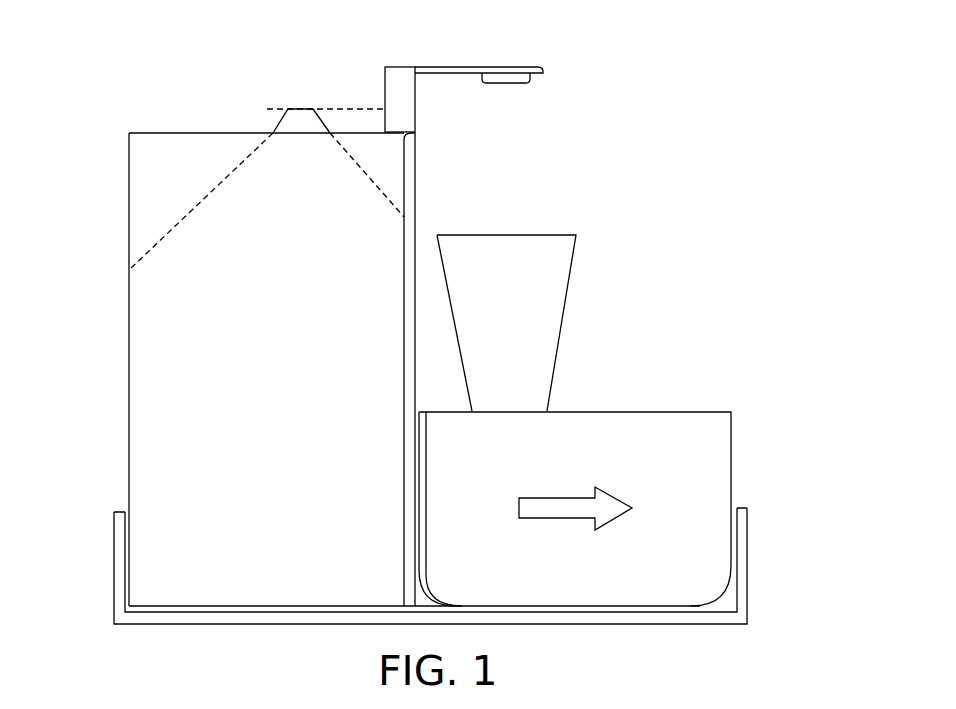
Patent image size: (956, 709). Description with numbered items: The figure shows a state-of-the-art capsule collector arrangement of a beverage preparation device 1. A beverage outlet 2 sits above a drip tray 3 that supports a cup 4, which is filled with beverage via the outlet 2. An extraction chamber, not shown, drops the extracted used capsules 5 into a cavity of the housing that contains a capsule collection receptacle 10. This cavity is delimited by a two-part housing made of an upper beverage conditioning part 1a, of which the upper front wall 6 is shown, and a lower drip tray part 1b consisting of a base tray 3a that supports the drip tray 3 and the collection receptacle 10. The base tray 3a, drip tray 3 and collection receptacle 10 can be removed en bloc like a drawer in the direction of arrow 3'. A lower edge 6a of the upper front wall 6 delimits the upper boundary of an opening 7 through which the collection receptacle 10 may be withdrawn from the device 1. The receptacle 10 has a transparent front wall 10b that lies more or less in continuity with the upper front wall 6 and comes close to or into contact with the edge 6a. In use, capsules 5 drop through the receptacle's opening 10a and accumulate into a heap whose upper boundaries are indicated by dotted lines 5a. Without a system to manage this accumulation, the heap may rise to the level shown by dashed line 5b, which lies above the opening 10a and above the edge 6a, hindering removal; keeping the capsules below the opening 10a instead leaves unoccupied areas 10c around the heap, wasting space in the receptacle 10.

The beverage preparation device 1 is at (627, 177).
The upper beverage conditioning part 1a is at (375, 66).
The lower drip tray part 1b is at (762, 510).
The beverage outlet 2 is at (507, 83).
The drip tray 3 is at (575, 480).
The arrow 3' is at (575, 487).
The base tray 3a is at (114, 528).
The cup 4 is at (574, 278).
The used capsule 5 is at (296, 110).
The dotted lines 5a is at (143, 255).
The dashed line 5b is at (342, 108).
The upper front wall 6 is at (407, 95).
The lower edge 6a is at (413, 135).
The opening 7 is at (432, 157).
The capsule collection receptacle 10 is at (140, 388).
The receptacle opening 10a is at (150, 133).
The transparent front wall 10b is at (409, 271).
The unoccupied areas 10c is at (138, 167).